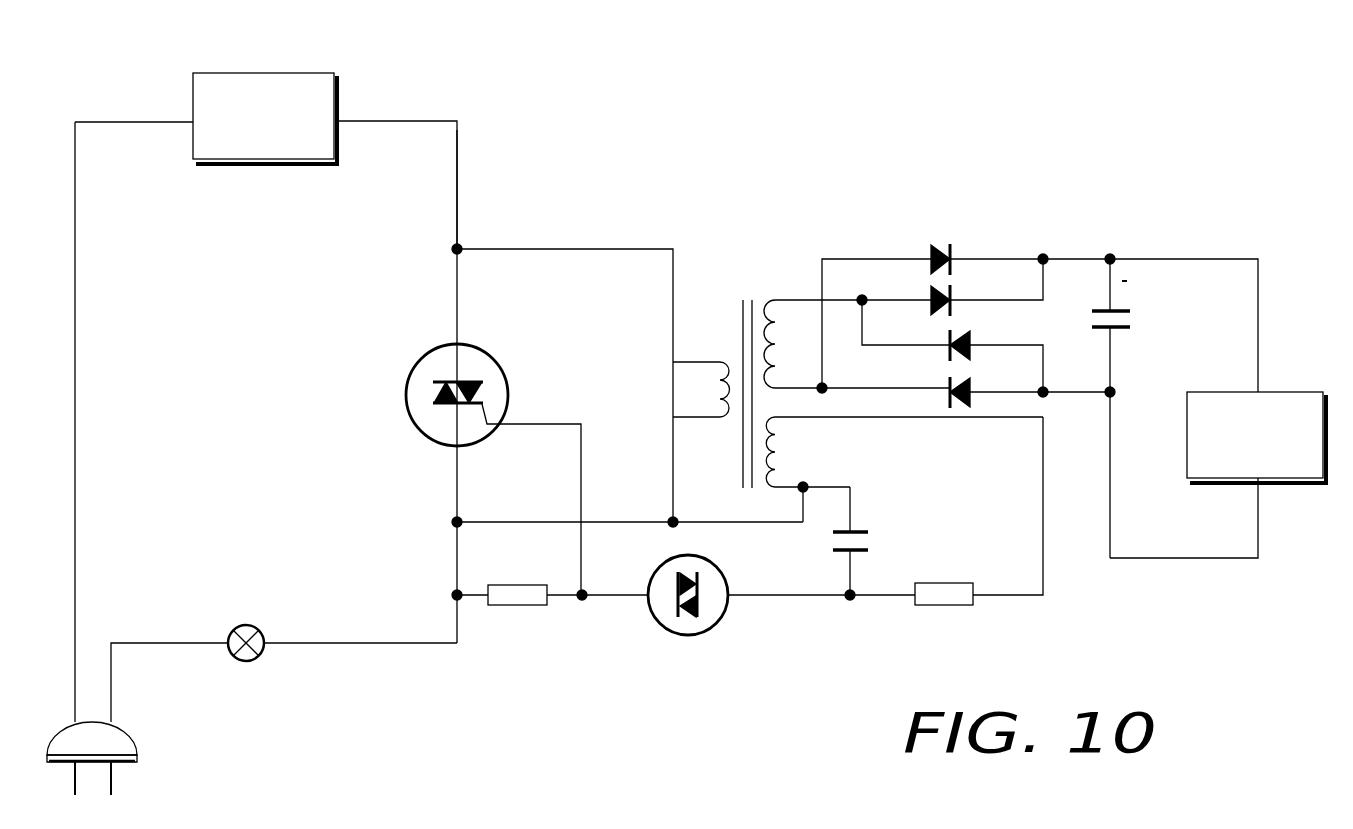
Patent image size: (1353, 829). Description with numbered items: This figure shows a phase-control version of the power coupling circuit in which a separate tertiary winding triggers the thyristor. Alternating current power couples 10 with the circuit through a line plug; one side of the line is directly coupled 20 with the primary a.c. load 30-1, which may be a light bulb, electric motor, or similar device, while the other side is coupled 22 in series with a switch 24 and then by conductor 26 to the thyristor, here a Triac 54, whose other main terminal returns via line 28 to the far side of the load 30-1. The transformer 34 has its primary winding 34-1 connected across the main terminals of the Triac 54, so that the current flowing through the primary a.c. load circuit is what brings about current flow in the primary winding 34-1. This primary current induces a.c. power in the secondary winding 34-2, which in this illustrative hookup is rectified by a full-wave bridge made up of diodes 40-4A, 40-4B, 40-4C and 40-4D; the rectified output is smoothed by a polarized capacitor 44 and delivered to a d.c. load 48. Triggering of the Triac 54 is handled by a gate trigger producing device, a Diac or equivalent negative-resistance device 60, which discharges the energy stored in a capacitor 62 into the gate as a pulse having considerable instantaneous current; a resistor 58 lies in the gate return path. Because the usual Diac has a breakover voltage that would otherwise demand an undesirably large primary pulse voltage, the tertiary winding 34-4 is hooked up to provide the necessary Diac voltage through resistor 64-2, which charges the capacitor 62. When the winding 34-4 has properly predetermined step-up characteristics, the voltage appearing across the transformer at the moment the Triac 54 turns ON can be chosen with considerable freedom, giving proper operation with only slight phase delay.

The a.c. power coupling 10 is at (140, 750).
The direct coupling to a.c. load 20 is at (72, 523).
The series coupling line 22 is at (152, 640).
The switch 24 is at (250, 622).
The conductor 26 is at (322, 640).
The line to load 28 is at (460, 193).
The primary a.c. load 30-1 is at (323, 72).
The transformer 34 is at (757, 293).
The transformer primary winding 34-1 is at (700, 393).
The transformer secondary winding 34-2 is at (784, 320).
The tertiary winding 34-4 is at (786, 438).
The bridge rectifier diode 40-4A is at (958, 252).
The bridge rectifier diode 40-4B is at (958, 292).
The bridge rectifier diode 40-4C is at (970, 340).
The bridge rectifier diode 40-4D is at (940, 385).
The filter capacitor 44 is at (1137, 317).
The d.c. load 48 is at (1312, 391).
The thyristor (Triac) 54 is at (415, 362).
The gate resistor 58 is at (510, 583).
The Diac gate trigger device 60 is at (650, 580).
The capacitor 62 is at (873, 543).
The resistor 64-2 is at (954, 582).